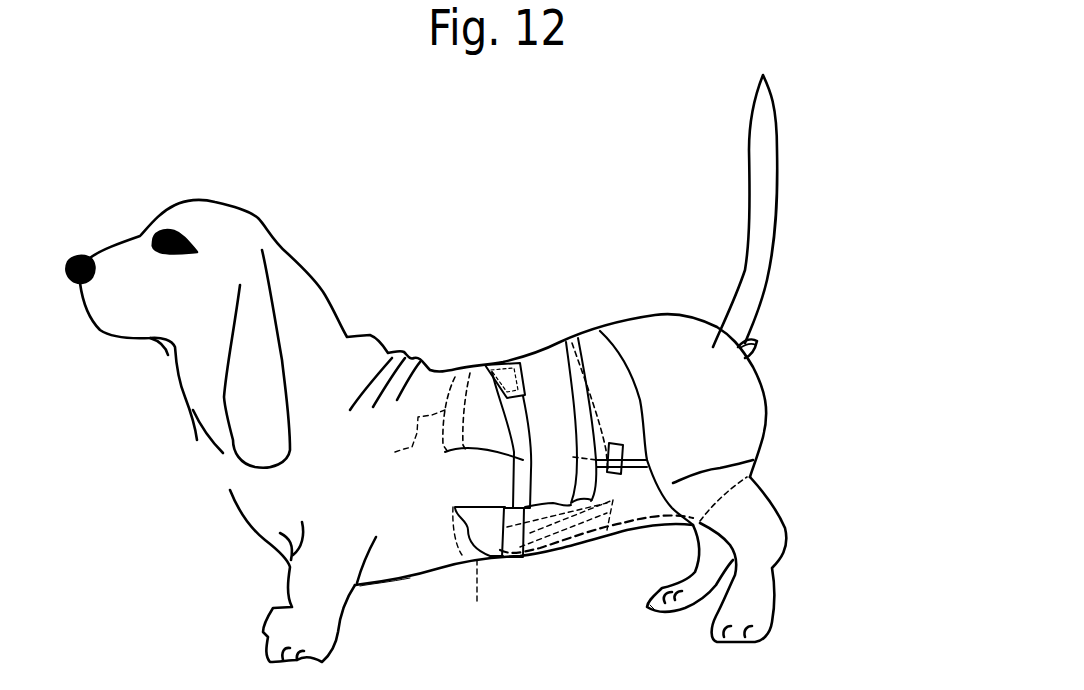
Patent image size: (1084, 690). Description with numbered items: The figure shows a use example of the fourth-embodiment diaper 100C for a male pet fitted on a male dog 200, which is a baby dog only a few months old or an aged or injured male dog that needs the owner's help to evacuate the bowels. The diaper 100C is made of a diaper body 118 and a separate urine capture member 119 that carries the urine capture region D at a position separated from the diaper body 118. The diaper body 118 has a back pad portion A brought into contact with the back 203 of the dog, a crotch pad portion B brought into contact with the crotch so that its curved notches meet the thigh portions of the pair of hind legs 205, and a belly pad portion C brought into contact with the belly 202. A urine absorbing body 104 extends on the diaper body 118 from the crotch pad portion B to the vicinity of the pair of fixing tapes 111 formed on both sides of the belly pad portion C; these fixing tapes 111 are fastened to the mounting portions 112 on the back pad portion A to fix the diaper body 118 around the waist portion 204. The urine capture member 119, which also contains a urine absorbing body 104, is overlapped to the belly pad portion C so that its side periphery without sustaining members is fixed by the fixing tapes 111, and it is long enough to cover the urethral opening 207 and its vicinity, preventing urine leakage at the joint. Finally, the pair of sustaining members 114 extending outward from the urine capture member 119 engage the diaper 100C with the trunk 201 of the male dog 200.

The male dog 200 is at (458, 177).
The diaper for a male pet 100C is at (623, 455).
The trunk 201 is at (495, 397).
The back 203 is at (523, 364).
The waist portion 204 is at (594, 337).
The mounting portions 112 is at (623, 374).
The fixing tapes 111 is at (640, 445).
The sustaining members 114 is at (445, 452).
The diaper body 118 is at (753, 357).
The urine capture member 119 is at (473, 508).
The belly 202 is at (453, 567).
The urine absorbing body 104 is at (476, 603).
The urethral opening 207 is at (576, 550).
The hind legs 205 is at (718, 622).
The back pad portion A is at (710, 343).
The crotch pad portion B is at (753, 421).
The belly pad portion C is at (627, 523).
The urine capture region D is at (543, 560).